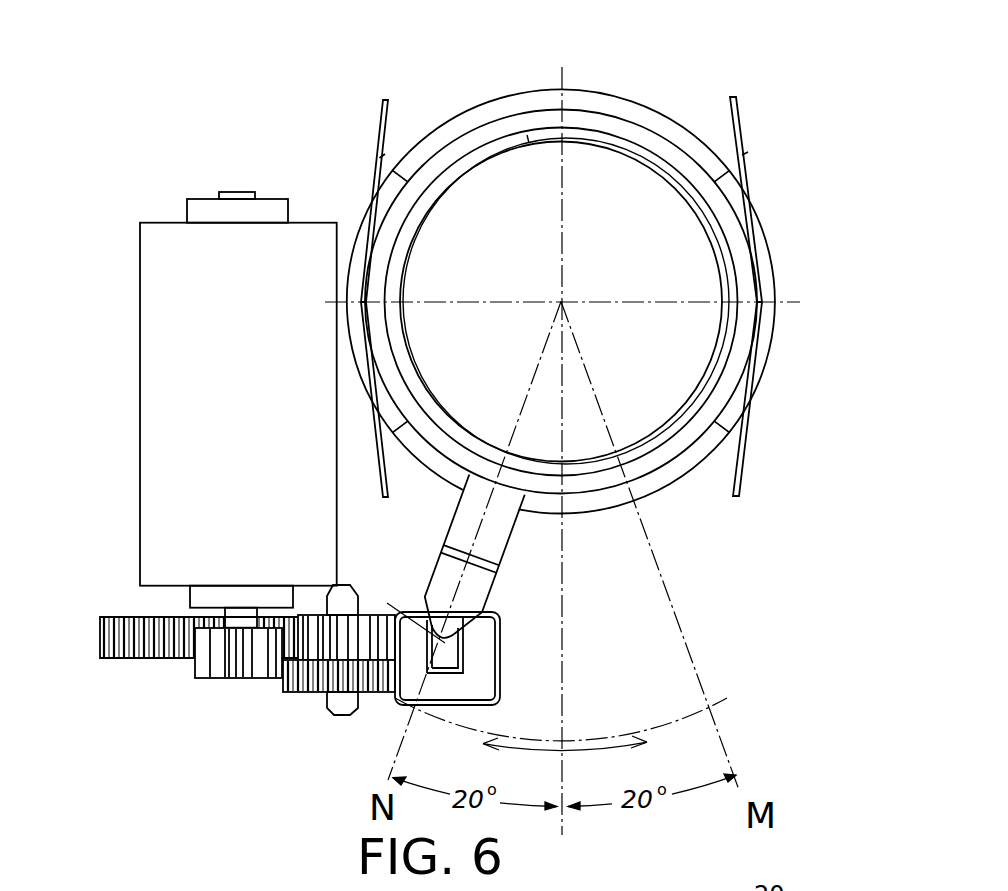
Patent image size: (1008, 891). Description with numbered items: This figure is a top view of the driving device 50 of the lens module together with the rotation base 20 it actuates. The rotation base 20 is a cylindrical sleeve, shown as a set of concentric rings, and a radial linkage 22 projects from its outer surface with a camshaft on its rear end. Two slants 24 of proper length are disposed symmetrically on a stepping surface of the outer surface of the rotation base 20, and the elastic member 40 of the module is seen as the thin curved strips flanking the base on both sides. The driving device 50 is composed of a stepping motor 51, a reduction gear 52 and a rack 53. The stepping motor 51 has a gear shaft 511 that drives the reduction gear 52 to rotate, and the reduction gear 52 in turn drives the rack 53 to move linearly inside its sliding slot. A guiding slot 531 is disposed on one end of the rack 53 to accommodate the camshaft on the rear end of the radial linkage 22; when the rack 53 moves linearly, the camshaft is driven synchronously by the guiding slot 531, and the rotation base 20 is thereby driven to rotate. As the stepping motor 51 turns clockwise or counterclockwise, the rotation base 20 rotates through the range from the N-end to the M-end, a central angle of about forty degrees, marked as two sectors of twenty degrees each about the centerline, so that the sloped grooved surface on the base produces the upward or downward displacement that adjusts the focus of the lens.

The rotation base 20 is at (636, 117).
The radial linkage 22 is at (460, 522).
The slants 24 is at (390, 199).
The elastic member 40 is at (388, 107).
The driving device 50 is at (111, 589).
The stepping motor 51 is at (152, 362).
The gear shaft 511 is at (222, 674).
The reduction gear 52 is at (308, 695).
The rack 53 is at (142, 659).
The guiding slot 531 is at (452, 655).